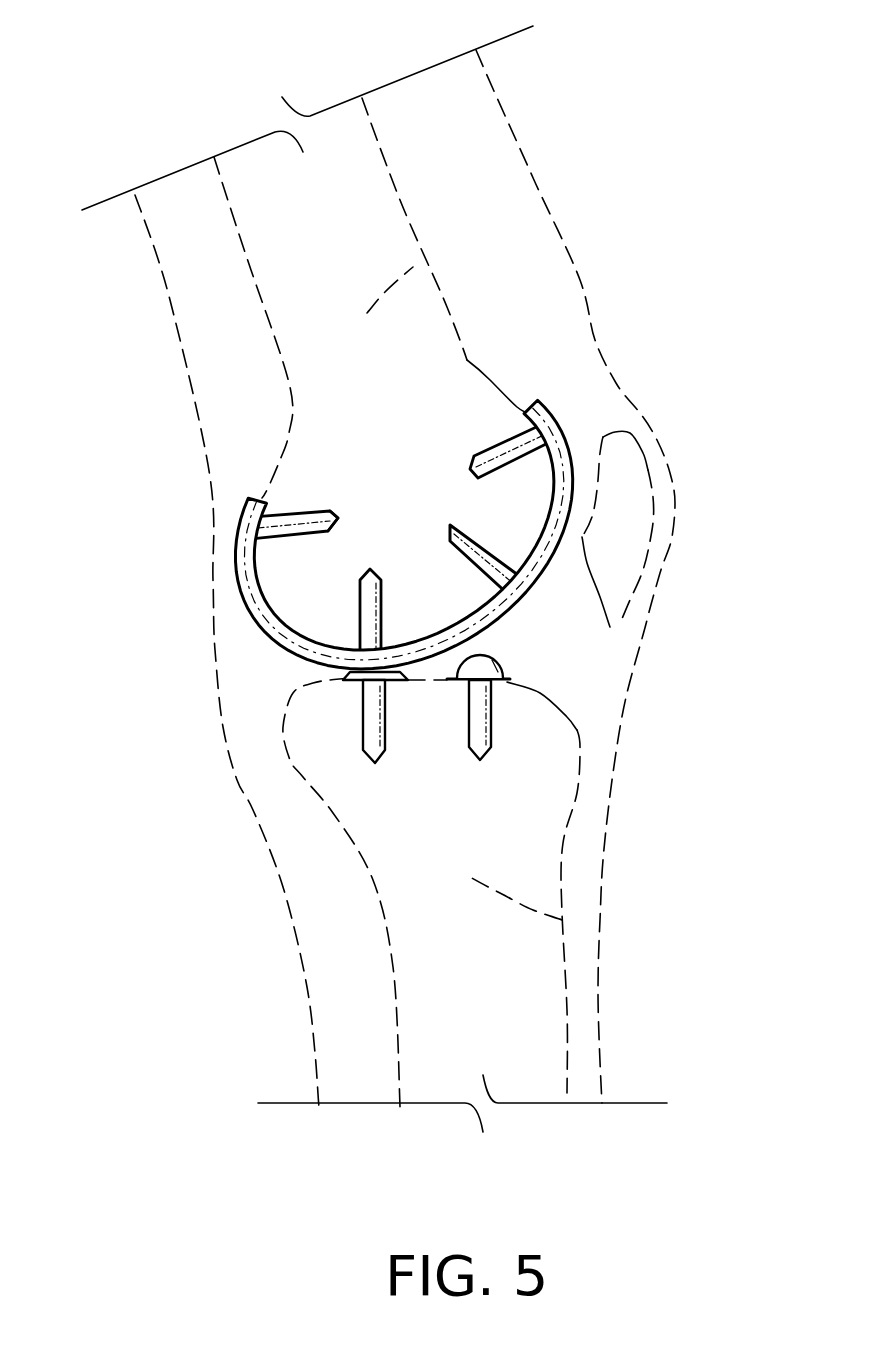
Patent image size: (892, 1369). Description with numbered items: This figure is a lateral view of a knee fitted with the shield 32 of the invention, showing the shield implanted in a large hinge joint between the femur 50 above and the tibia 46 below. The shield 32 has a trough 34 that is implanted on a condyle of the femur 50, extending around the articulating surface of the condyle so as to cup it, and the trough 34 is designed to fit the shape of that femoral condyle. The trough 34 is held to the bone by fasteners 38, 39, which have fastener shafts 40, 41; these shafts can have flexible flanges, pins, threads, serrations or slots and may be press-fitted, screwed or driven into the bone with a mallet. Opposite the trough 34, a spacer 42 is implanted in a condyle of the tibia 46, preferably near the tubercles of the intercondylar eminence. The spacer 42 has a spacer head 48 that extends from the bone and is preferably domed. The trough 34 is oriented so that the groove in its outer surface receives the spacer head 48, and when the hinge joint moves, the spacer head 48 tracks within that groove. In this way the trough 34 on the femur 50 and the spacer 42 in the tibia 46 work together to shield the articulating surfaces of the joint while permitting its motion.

The shield 32 is at (521, 603).
The trough 34 is at (567, 450).
The fastener 38 is at (293, 517).
The fastener shaft 40 is at (333, 510).
The fastener shaft 41 is at (357, 575).
The fastener 39 is at (368, 607).
The spacer 42 is at (493, 728).
The spacer head 48 is at (505, 669).
The tibia 46 is at (562, 920).
The femur 50 is at (422, 257).